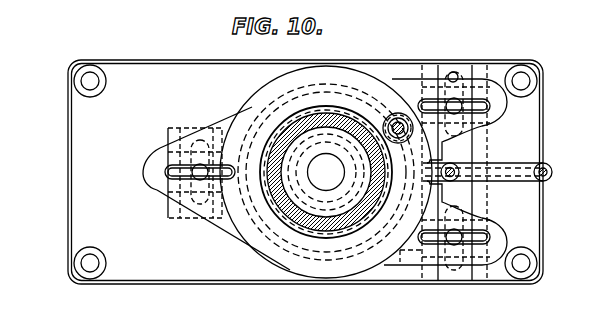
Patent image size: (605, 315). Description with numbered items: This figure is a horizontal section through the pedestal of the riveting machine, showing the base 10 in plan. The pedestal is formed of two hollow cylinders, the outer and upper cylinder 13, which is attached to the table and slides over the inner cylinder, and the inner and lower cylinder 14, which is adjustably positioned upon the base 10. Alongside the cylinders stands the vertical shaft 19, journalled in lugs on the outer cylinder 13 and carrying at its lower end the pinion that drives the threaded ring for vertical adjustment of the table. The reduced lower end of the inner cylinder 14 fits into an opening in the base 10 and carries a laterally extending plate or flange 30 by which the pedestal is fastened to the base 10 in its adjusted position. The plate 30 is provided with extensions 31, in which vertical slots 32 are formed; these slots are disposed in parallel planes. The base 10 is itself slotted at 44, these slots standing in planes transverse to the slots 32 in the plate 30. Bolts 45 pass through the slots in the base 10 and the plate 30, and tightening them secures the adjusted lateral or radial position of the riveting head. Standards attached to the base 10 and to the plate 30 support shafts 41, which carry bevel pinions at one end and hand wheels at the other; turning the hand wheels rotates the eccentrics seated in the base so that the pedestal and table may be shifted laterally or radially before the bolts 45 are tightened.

The base 10 is at (78, 202).
The outer cylinder 13 is at (277, 218).
The inner cylinder 14 is at (303, 127).
The vertical shaft 19 is at (398, 115).
The plate or flange 30 is at (227, 131).
The extensions 31 is at (150, 176).
The vertical slots 32 is at (170, 178).
The shafts 41 is at (455, 167).
The slots 44 is at (455, 73).
The bolts 45 is at (200, 168).